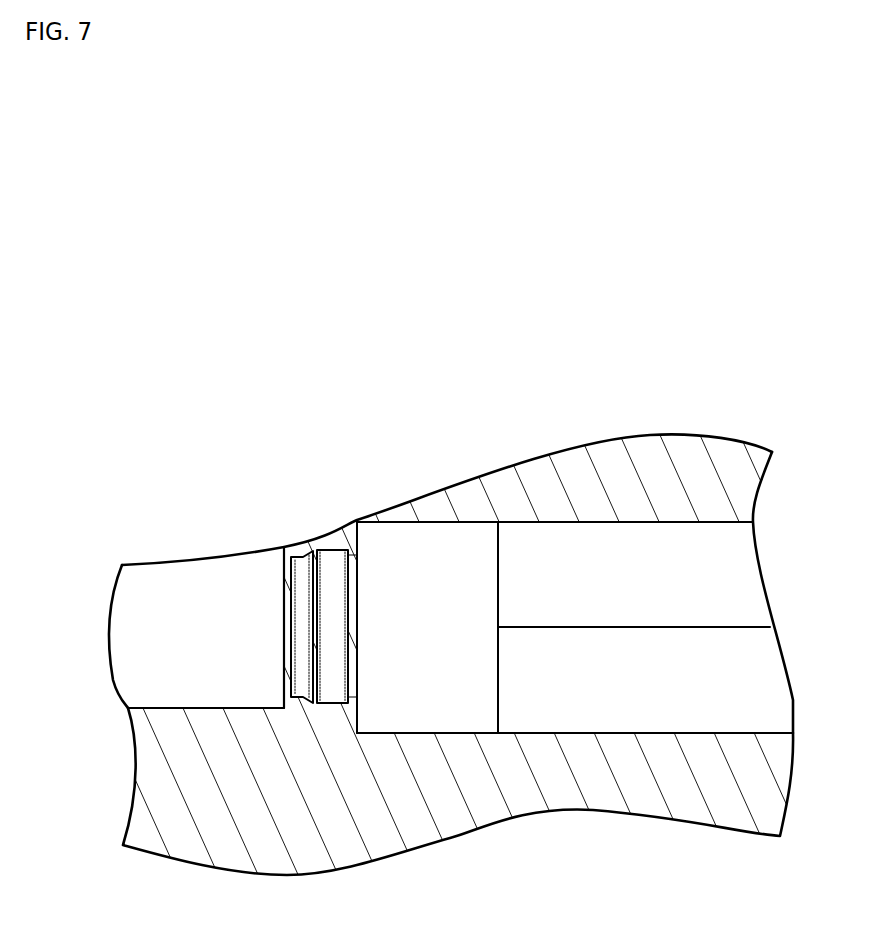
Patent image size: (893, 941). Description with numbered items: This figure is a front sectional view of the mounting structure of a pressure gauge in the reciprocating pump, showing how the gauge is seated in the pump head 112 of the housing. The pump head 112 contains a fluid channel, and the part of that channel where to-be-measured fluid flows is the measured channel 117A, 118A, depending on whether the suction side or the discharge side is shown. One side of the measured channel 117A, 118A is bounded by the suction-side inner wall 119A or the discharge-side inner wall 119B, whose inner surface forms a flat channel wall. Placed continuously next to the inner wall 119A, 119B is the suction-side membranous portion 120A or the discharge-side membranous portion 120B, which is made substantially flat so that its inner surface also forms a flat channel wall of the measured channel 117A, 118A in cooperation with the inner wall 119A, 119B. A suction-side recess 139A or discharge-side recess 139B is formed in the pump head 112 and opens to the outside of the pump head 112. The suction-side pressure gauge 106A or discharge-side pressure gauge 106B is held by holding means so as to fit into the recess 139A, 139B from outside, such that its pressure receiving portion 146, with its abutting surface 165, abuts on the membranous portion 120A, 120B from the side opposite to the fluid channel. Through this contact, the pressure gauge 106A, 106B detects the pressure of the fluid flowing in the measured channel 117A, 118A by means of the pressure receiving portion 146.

The suction-side pressure gauge 106A is at (446, 470).
The discharge-side pressure gauge 106B is at (435, 522).
The pump head 112 is at (583, 785).
The measured channel 117A is at (203, 672).
The measured channel 118A is at (237, 668).
The suction-side inner wall 119A is at (251, 821).
The discharge-side inner wall 119B is at (290, 710).
The suction-side membranous portion 120A is at (173, 613).
The discharge-side membranous portion 120B is at (284, 652).
The suction-side recess 139A is at (555, 462).
The discharge-side recess 139B is at (607, 523).
The pressure receiving portion 146 is at (298, 630).
The abutting surface 165 is at (284, 577).